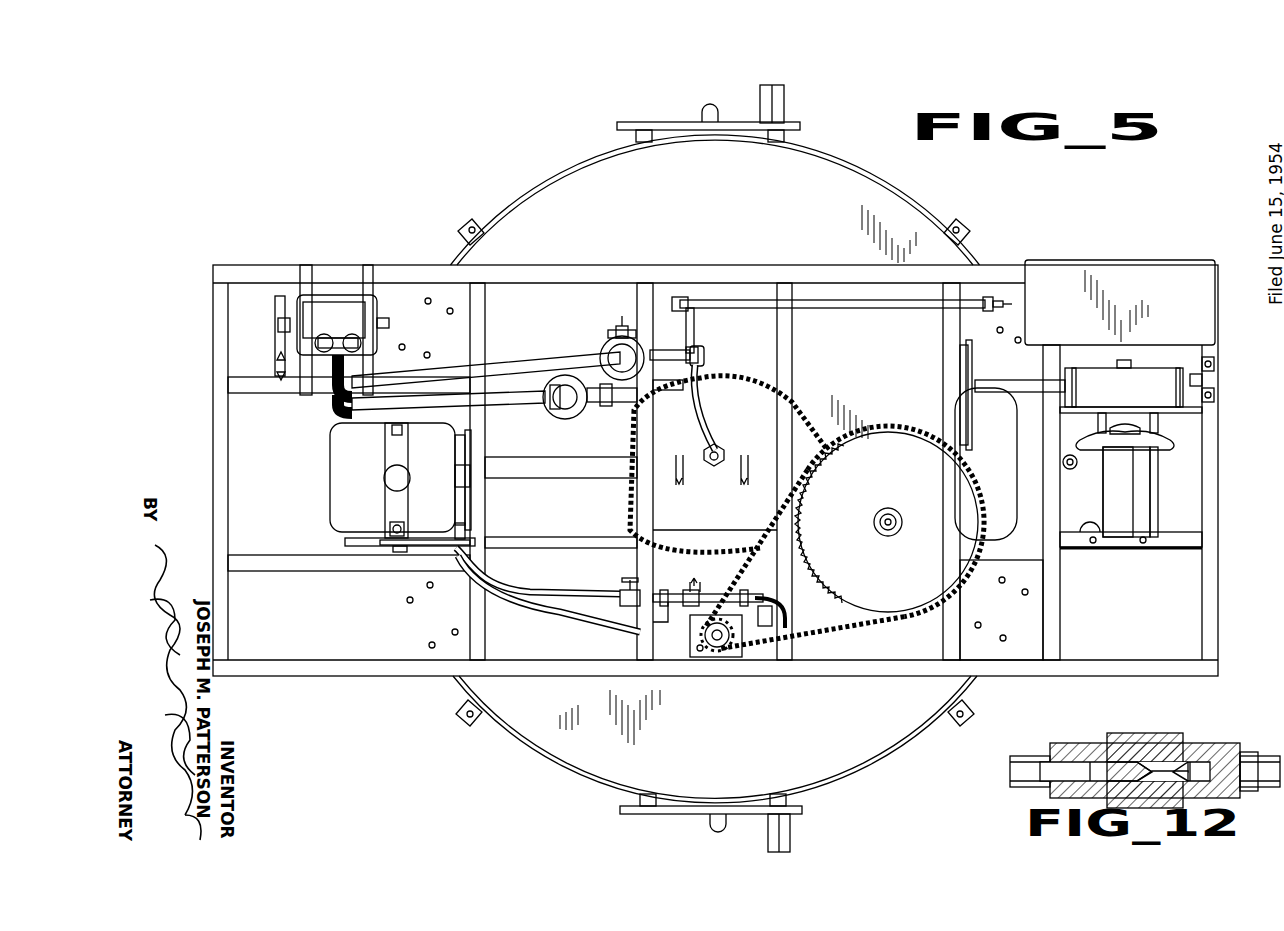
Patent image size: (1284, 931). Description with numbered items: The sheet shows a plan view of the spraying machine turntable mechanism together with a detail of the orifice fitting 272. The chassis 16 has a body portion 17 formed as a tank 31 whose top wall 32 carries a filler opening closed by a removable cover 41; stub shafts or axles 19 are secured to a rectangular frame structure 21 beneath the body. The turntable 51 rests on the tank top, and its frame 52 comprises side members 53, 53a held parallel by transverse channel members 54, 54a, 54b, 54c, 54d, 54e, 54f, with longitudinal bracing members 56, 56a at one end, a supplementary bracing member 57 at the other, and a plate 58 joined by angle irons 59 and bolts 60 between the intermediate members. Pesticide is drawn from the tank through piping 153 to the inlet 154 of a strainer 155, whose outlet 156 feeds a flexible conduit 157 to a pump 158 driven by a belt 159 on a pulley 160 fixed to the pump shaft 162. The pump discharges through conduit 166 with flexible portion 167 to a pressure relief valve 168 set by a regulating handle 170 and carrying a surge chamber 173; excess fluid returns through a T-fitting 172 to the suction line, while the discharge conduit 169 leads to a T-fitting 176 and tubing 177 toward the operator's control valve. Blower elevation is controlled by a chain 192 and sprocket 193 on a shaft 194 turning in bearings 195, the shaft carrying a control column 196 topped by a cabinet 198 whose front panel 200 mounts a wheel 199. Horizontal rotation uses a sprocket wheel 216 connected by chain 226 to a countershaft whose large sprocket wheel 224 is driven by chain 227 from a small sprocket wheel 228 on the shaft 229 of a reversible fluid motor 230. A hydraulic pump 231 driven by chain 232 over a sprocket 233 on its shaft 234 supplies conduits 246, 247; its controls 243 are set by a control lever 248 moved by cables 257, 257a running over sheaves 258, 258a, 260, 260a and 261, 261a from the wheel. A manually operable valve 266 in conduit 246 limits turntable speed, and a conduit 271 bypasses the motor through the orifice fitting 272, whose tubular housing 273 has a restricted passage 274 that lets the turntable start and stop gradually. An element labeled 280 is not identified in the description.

In FIG. 5, the chassis 16 is at (531, 750).
In FIG. 5, the body portion 17 is at (862, 196).
In FIG. 5, the stub shafts or axles 19 is at (786, 100).
In FIG. 5, the rectangular frame structure 21 is at (810, 802).
In FIG. 5, the tank 31 is at (563, 170).
In FIG. 5, the top wall 32 is at (698, 147).
In FIG. 5, the removable cover 41 is at (986, 464).
In FIG. 5, the turntable 51 is at (210, 440).
In FIG. 5, the frame 52 is at (356, 678).
In FIG. 5, the side member 53 is at (267, 274).
In FIG. 5, the side member 53a is at (382, 676).
In FIG. 5, the transverse channel member 54 is at (228, 615).
In FIG. 5, the transverse channel member 54a is at (485, 633).
In FIG. 5, the transverse channel member 54b is at (640, 651).
In FIG. 5, the transverse channel member 54c is at (790, 656).
In FIG. 5, the transverse channel member 54d is at (950, 640).
In FIG. 5, the transverse channel member 54e is at (1060, 633).
In FIG. 5, the transverse channel member 54f is at (1218, 633).
In FIG. 5, the longitudinal bracing member 56 is at (259, 388).
In FIG. 5, the longitudinal bracing member 56a is at (280, 560).
In FIG. 5, the supplementary longitudinal bracing member 57 is at (1137, 548).
In FIG. 5, the plate 58 is at (715, 516).
In FIG. 5, the angle irons 59 is at (712, 478).
In FIG. 5, the bolts 60 is at (662, 442).
In FIG. 5, the piping 153 is at (735, 440).
In FIG. 5, the inlet 154 is at (590, 420).
In FIG. 5, the strainer 155 is at (557, 408).
In FIG. 5, the outlet 156 is at (565, 375).
In FIG. 5, the flexible conduit 157 is at (525, 394).
In FIG. 5, the pump 158 is at (353, 328).
In FIG. 5, the belt 159 is at (276, 365).
In FIG. 5, the pulley 160 is at (276, 347).
In FIG. 5, the pump shaft 162 is at (276, 322).
In FIG. 5, the conduit 166 is at (444, 364).
In FIG. 5, the flexible portion 167 is at (460, 374).
In FIG. 5, the pressure relief valve 168 is at (636, 334).
In FIG. 5, the discharge conduit 169 is at (694, 345).
In FIG. 5, the regulating handle 170 is at (620, 325).
In FIG. 5, the T-fitting 172 is at (618, 404).
In FIG. 5, the surge chamber 173 is at (702, 354).
In FIG. 5, the T-fitting 176 is at (690, 355).
In FIG. 5, the tubing 177 is at (892, 312).
In FIG. 5, the chain 192 is at (998, 330).
In FIG. 5, the sprocket 193 is at (1000, 342).
In FIG. 5, the shaft 194 is at (1017, 381).
In FIG. 5, the bearings 195 is at (938, 378).
In FIG. 5, the control column 196 is at (1154, 395).
In FIG. 5, the cabinet 198 is at (1124, 383).
In FIG. 5, the wheel 199 is at (1156, 446).
In FIG. 5, the front panel 200 is at (1156, 417).
In FIG. 5, the sprocket wheel 216 is at (836, 442).
In FIG. 5, the driven sprocket wheel 224 is at (888, 522).
In FIG. 5, the chain 226 is at (888, 522).
In FIG. 5, the chain 227 is at (890, 614).
In FIG. 5, the small driven sprocket wheel 228 is at (725, 648).
In FIG. 5, the shaft 229 is at (700, 656).
In FIG. 5, the reversible fluid motor 230 is at (690, 658).
In FIG. 5, the hydraulic pump 231 is at (345, 453).
In FIG. 5, the chain 232 is at (500, 518).
In FIG. 5, the sprocket 233 is at (500, 496).
In FIG. 5, the shaft 234 is at (454, 480).
In FIG. 5, the controls 243 is at (385, 546).
In FIG. 5, the conduit 246 is at (544, 582).
In FIG. 5, the conduit 247 is at (510, 581).
In FIG. 5, the control lever 248 is at (370, 543).
In FIG. 5, the cable 257 is at (1110, 532).
In FIG. 5, the cable 257a is at (1160, 532).
In FIG. 5, the sheave 258 is at (1088, 444).
In FIG. 5, the sheave 258a is at (1156, 454).
In FIG. 5, the sheave 260 is at (1082, 542).
In FIG. 5, the sheave 260a is at (1146, 550).
In FIG. 5, the sheave 261 is at (453, 535).
In FIG. 5, the sheave 261a is at (395, 553).
In FIG. 5, the manually operable valve 266 is at (618, 591).
In FIG. 5, the conduit 271 is at (775, 612).
In FIG. 12, the conduit 271 is at (1252, 766).
In FIG. 5, the orifice fitting 272 is at (719, 601).
In FIG. 12, the orifice fitting 272 is at (1140, 746).
In FIG. 12, the tubular housing 273 is at (1100, 748).
In FIG. 12, the passage 274 is at (1150, 772).
In FIG. 5, the nozzle 280 is at (716, 455).